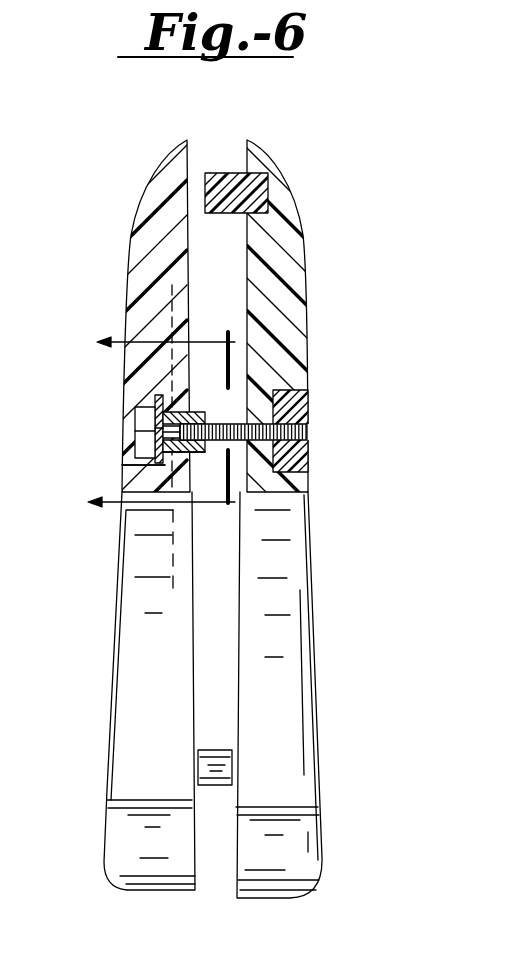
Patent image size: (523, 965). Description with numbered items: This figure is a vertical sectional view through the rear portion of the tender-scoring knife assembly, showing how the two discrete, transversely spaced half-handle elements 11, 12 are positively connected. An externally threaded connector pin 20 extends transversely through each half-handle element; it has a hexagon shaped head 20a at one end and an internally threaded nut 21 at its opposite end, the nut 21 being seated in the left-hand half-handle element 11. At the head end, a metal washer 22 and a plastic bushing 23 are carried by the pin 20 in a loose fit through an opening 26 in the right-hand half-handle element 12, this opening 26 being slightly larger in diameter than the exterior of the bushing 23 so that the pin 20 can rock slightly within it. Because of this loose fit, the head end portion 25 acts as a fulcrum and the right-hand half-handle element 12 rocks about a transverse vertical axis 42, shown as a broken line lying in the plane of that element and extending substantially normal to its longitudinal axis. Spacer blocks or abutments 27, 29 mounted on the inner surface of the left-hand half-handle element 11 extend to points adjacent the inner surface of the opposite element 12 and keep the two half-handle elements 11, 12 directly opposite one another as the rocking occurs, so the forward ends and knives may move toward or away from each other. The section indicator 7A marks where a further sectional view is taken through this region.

The half-handle element 11 is at (315, 650).
The half-handle element 12 is at (114, 632).
The externally threaded pin 20 is at (270, 397).
The hexagon shaped head 20a is at (134, 440).
The internally threaded nut 21 is at (308, 402).
The metal washer 22 is at (155, 398).
The plastic bushing 23 is at (198, 468).
The head end portion 25 is at (153, 428).
The opening 26 is at (157, 467).
The spacer block 27 is at (218, 750).
The spacer block 29 is at (228, 173).
The transverse vertical axis 42 is at (170, 316).
The section line 7A is at (145, 421).